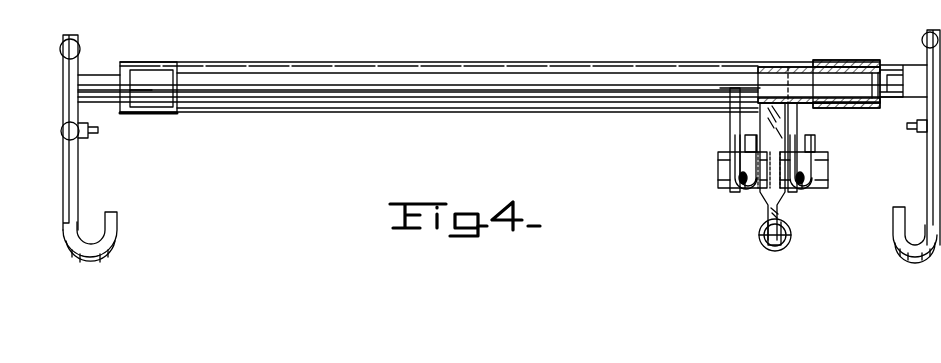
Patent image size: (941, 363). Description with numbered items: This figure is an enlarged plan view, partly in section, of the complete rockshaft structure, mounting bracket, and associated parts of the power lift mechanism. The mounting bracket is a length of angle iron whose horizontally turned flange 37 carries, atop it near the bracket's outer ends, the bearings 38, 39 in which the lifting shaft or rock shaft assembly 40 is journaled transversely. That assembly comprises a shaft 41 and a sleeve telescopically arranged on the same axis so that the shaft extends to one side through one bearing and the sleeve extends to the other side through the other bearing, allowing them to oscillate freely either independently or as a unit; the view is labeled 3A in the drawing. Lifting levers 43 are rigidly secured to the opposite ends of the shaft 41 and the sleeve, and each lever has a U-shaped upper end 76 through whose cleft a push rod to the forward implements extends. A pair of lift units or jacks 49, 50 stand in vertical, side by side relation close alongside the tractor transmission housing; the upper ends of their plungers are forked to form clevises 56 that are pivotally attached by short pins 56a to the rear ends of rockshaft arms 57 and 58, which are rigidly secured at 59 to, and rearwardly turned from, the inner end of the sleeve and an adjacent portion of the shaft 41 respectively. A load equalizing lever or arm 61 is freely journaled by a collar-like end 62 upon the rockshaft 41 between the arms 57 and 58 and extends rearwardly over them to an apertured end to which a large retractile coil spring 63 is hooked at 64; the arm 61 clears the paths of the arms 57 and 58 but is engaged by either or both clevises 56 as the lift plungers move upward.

The track bar 3A is at (368, 54).
The flange 37 is at (371, 116).
The bearing 38 is at (145, 76).
The bearing 39 is at (831, 60).
The rock shaft assembly 40 is at (800, 48).
The shaft 41 is at (460, 84).
The lifting lever 43 is at (78, 176).
The lift unit 49 is at (707, 170).
The lift unit 50 is at (836, 163).
The clevis 56 is at (727, 190).
The short pin 56a is at (745, 190).
The rockshaft arm 57 is at (731, 122).
The rockshaft arm 58 is at (798, 130).
The rigid securement 59 is at (730, 92).
The load equalizing lever 61 is at (763, 105).
The collar-like end 62 is at (762, 67).
The retractile coil spring 63 is at (792, 240).
The hook connection 64 is at (765, 240).
The U-shaped upper end 76 is at (116, 232).